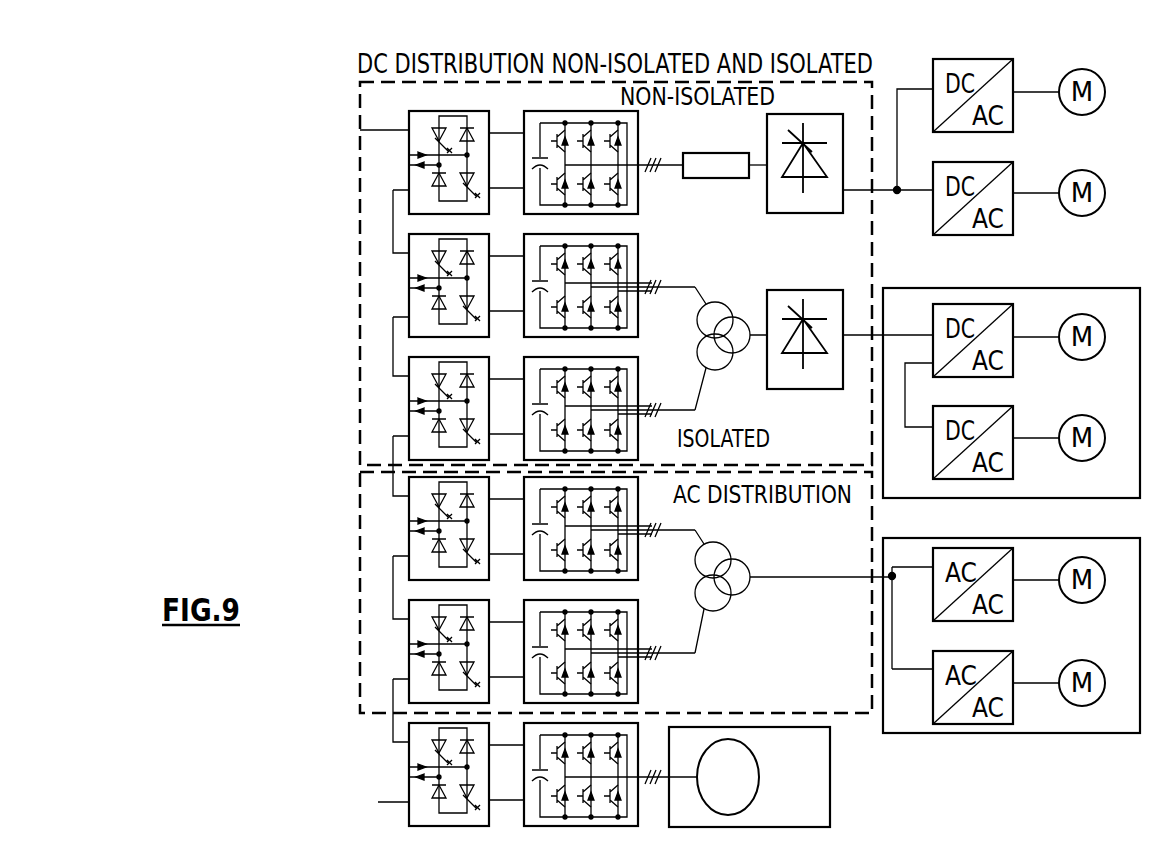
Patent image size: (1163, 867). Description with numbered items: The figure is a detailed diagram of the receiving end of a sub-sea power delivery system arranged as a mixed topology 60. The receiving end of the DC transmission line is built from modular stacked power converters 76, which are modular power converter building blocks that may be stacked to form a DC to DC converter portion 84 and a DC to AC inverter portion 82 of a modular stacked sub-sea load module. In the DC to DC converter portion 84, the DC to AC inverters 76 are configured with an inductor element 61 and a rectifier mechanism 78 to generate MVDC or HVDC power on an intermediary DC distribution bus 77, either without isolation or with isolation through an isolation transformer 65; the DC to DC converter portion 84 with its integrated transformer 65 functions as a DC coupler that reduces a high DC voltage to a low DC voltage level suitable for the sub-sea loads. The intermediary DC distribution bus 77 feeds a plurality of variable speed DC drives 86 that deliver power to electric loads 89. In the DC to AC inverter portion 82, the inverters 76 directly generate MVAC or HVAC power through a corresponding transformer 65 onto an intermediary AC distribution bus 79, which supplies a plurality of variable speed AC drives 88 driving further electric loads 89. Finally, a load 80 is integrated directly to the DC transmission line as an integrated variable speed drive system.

The mixed topology 60 is at (197, 419).
The inductor element 61 is at (710, 178).
The isolation transformer 65 is at (712, 302).
The modular stacked power converter 76 is at (638, 200).
The intermediary DC distribution bus 77 is at (897, 194).
The rectifier mechanism 78 is at (830, 290).
The intermediary AC distribution bus 79 is at (808, 578).
The load integrated to the DC transmission line 80 is at (830, 773).
The DC to AC inverter portion 82 is at (357, 580).
The DC to DC converter portion 84 is at (357, 190).
The variable speed DC drive 86 is at (1013, 73).
The variable speed AC drive 88 is at (1012, 708).
The electric load 89 is at (1105, 87).